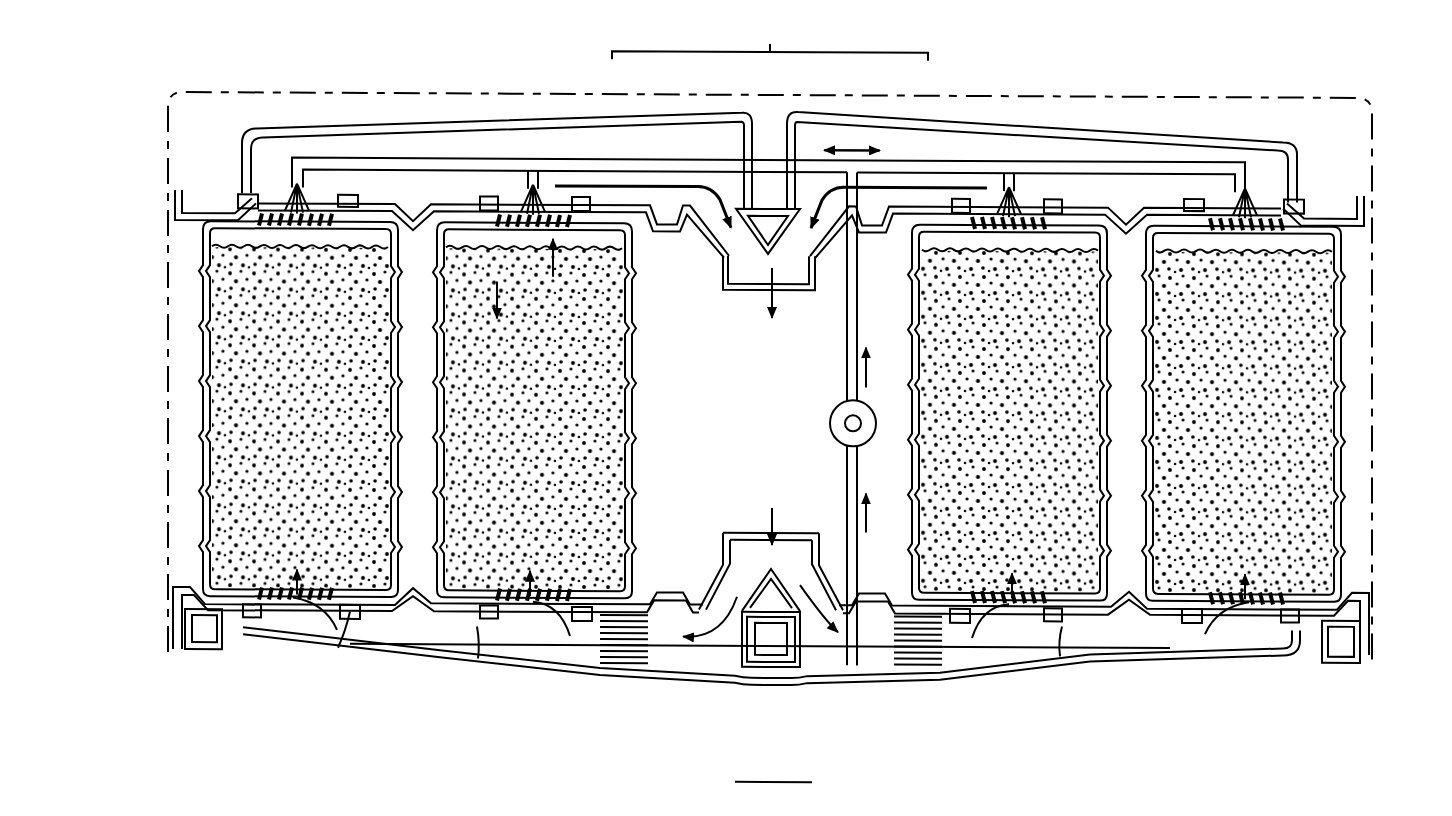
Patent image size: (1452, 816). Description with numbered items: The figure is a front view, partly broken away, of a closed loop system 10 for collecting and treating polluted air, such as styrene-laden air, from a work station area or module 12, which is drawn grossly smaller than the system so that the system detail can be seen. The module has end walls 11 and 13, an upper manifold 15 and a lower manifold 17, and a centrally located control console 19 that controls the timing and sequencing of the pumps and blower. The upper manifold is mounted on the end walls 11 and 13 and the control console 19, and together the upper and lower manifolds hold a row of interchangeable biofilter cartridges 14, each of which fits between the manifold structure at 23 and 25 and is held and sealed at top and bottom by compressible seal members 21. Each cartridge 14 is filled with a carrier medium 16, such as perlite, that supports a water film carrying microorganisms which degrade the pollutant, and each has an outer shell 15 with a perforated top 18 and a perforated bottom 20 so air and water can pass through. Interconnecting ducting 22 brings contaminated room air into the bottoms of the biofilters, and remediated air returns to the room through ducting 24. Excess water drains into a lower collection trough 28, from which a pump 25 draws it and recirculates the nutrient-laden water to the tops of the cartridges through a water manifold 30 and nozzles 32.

The closed loop system 10 is at (208, 64).
The end wall 11 is at (168, 377).
The work station area or module 12 is at (708, 431).
The end wall 13 is at (1380, 283).
The biofilter cartridge 14 is at (203, 487).
The upper manifold 15 is at (528, 118).
The carrier medium 16 is at (233, 342).
The lower manifold 17 is at (497, 675).
The perforated top 18 is at (318, 208).
The control console 19 is at (770, 38).
The perforated bottom 20 is at (294, 632).
The compressible seal member 21 is at (238, 197).
The interconnecting ducting 22 is at (720, 567).
The upper manifold sealing location 23 is at (240, 192).
The ducting 24 is at (720, 270).
The pump 25 is at (833, 425).
The lower collection trough 28 is at (827, 668).
The water manifold 30 is at (907, 170).
The nozzle 32 is at (293, 188).